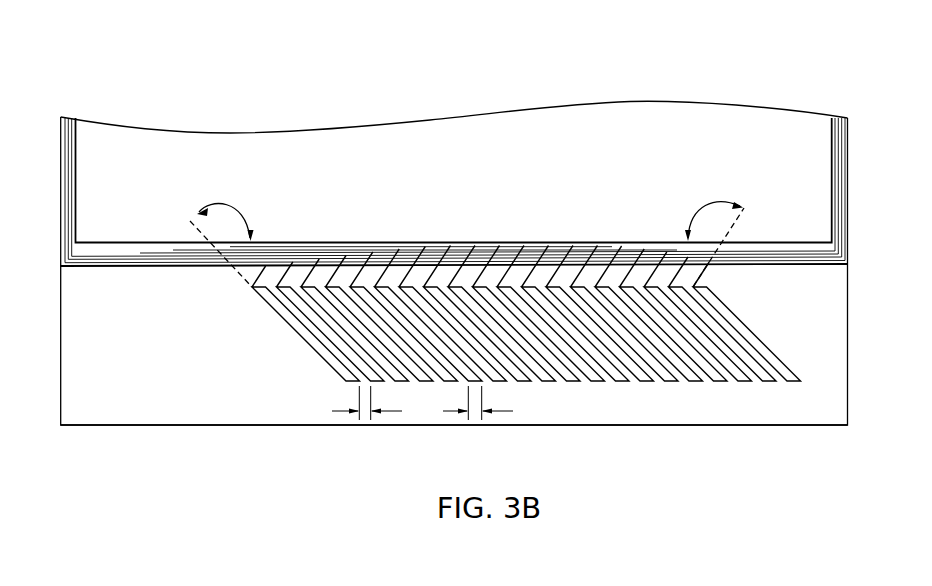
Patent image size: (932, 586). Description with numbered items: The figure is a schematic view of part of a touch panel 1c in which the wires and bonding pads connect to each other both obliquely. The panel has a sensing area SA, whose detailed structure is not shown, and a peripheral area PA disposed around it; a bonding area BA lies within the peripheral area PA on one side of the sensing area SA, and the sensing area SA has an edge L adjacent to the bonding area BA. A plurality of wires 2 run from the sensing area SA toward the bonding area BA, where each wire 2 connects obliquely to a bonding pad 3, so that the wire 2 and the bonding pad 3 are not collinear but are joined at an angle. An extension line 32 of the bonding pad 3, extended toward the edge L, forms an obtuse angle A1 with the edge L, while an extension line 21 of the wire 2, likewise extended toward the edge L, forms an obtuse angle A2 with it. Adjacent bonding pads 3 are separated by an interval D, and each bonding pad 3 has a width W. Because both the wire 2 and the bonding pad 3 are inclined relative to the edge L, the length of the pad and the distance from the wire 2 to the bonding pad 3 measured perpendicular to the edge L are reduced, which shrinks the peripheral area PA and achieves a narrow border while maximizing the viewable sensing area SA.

The touch panel 1c is at (103, 67).
The wire 2 is at (838, 213).
The extension line of the wire 21 is at (743, 224).
The bonding pad 3 is at (288, 323).
The extension line of the bonding pad 32 is at (201, 233).
The edge L is at (810, 243).
The sensing area SA is at (609, 120).
The peripheral area PA is at (824, 324).
The bonding area BA is at (837, 387).
The obtuse angle A1 is at (227, 217).
The obtuse angle A2 is at (714, 215).
The interval D is at (367, 403).
The width W is at (480, 403).